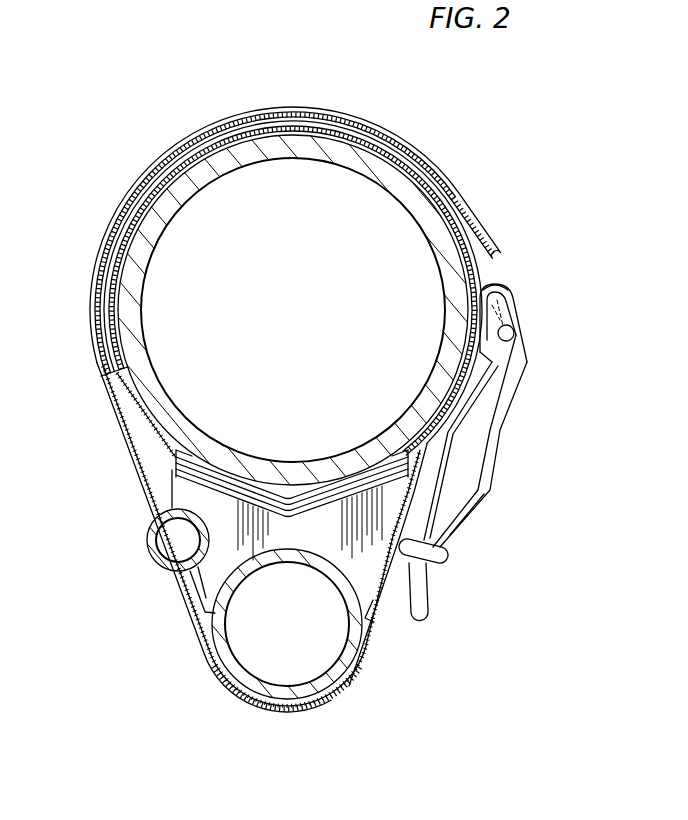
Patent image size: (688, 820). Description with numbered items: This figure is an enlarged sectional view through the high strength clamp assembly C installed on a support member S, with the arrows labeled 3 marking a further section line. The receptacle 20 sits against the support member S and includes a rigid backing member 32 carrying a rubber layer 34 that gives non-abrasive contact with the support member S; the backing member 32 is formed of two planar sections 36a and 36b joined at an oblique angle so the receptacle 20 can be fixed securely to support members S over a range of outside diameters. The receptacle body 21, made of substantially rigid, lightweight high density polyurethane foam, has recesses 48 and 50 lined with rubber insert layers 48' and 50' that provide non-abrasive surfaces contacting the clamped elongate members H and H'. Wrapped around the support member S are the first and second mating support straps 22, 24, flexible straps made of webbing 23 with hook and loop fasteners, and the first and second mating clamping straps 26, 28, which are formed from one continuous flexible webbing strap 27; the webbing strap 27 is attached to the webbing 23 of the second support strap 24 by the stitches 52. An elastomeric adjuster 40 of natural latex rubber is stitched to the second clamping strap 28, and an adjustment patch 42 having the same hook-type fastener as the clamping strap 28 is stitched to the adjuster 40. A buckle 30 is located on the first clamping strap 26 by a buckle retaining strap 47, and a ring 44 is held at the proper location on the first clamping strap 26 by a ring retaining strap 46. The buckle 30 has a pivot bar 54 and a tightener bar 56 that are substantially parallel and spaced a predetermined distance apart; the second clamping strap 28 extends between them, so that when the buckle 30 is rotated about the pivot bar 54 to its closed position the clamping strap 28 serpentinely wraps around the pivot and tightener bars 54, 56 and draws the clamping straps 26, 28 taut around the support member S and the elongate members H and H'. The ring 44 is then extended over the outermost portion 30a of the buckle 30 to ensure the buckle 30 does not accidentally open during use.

The high strength clamp assembly C is at (265, 104).
The support member S is at (354, 160).
The receptacle 20 is at (177, 488).
The receptacle body 21 is at (292, 560).
The first mating support strap 22 is at (133, 403).
The webbing 23 is at (240, 497).
The second mating support strap 24 is at (465, 235).
The first mating clamping strap 26 is at (113, 453).
The webbing strap 27 is at (461, 422).
The second mating clamping strap 28 is at (498, 288).
The buckle 30 is at (492, 463).
The outermost portion of the buckle 30a is at (430, 597).
The rigid backing member 32 is at (393, 450).
The rubber layer 34 is at (363, 475).
The planar section 36a is at (185, 468).
The planar section 36b is at (332, 480).
The elastomeric adjuster 40 is at (110, 283).
The adjustment patch 42 is at (102, 330).
The ring 44 is at (450, 559).
The ring retaining strap 46 is at (412, 518).
The buckle retaining strap 47 is at (476, 347).
The recess 48 is at (166, 618).
The rubber insert layer 48' is at (154, 597).
The recess 50 is at (398, 565).
The rubber insert layer 50' is at (388, 656).
The stitches 52 is at (465, 378).
The pivot bar 54 is at (492, 300).
The tightener bar 56 is at (515, 335).
The elongate member H is at (160, 541).
The elongate member H' is at (286, 625).
The section line 3 is at (292, 422).